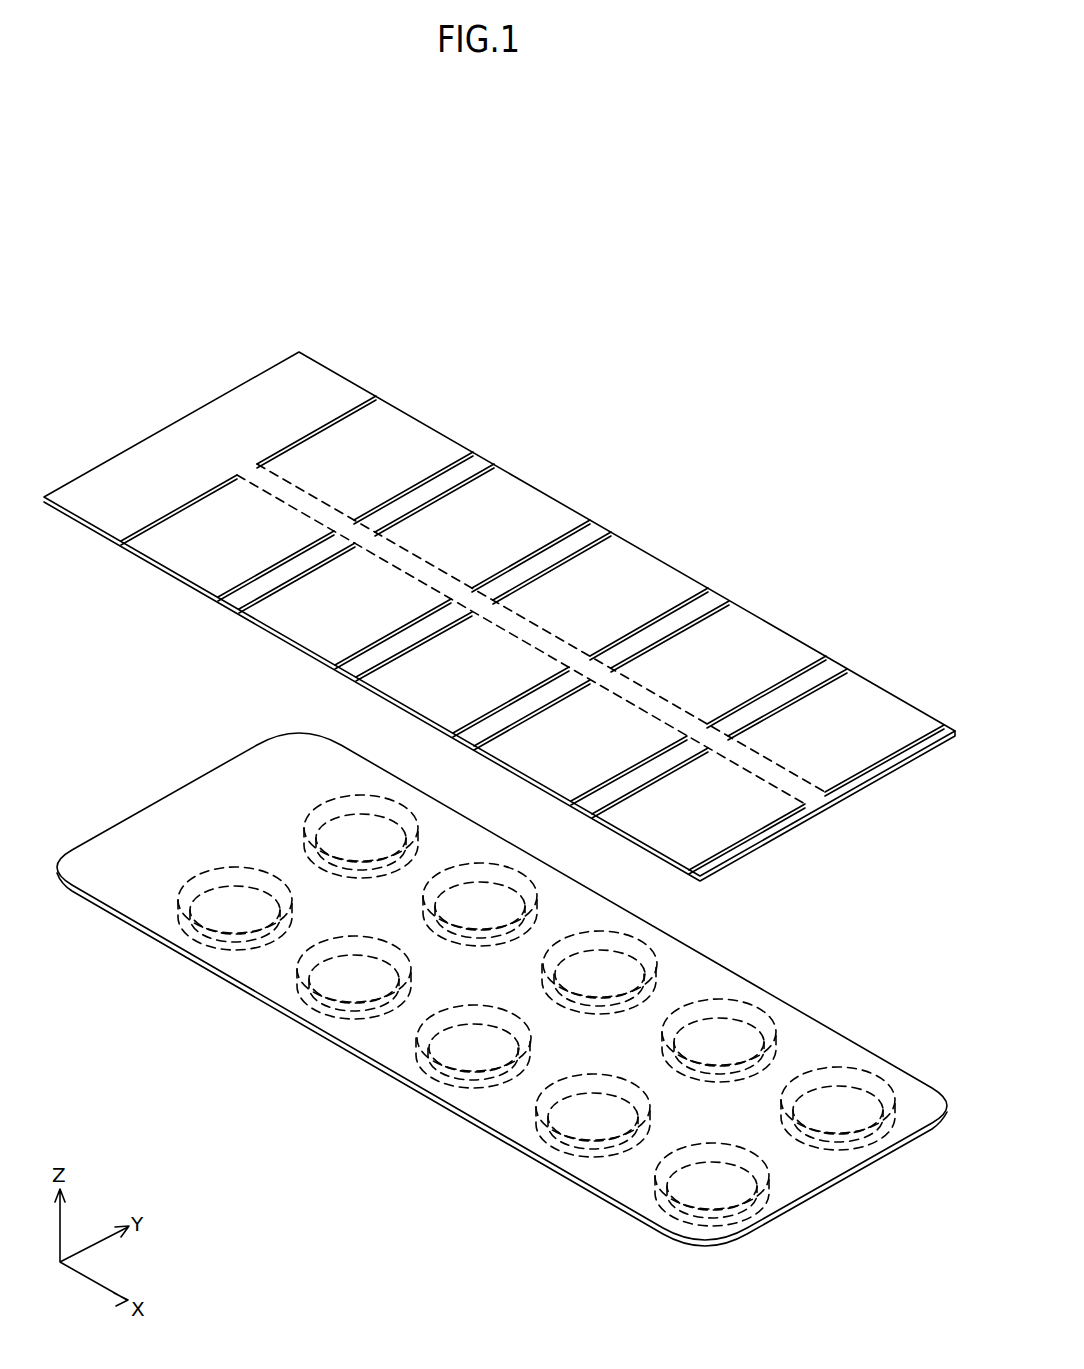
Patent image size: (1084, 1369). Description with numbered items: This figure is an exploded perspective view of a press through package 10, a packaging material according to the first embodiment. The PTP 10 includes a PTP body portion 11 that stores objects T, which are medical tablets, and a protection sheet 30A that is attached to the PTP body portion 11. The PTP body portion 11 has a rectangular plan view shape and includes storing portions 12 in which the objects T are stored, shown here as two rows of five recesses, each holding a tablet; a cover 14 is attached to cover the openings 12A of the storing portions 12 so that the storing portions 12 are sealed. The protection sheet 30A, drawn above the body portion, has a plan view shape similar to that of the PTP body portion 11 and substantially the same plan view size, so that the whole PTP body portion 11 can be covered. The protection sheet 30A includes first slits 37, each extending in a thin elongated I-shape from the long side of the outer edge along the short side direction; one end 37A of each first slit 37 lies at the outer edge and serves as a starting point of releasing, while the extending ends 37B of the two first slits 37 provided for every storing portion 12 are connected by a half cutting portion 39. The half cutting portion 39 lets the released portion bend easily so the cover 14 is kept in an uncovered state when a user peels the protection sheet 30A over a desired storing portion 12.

The press through package 10 is at (581, 190).
The protection sheet 30A is at (270, 366).
The first slit 37 is at (155, 518).
The one end of first slit 37A is at (120, 545).
The extending end of first slit 37B is at (237, 476).
The half cutting portion 39 is at (260, 486).
The PTP body portion 11 is at (227, 768).
The storing portion 12 is at (180, 898).
The opening 12A is at (198, 874).
The object T is at (225, 918).
The cover 14 is at (832, 1053).